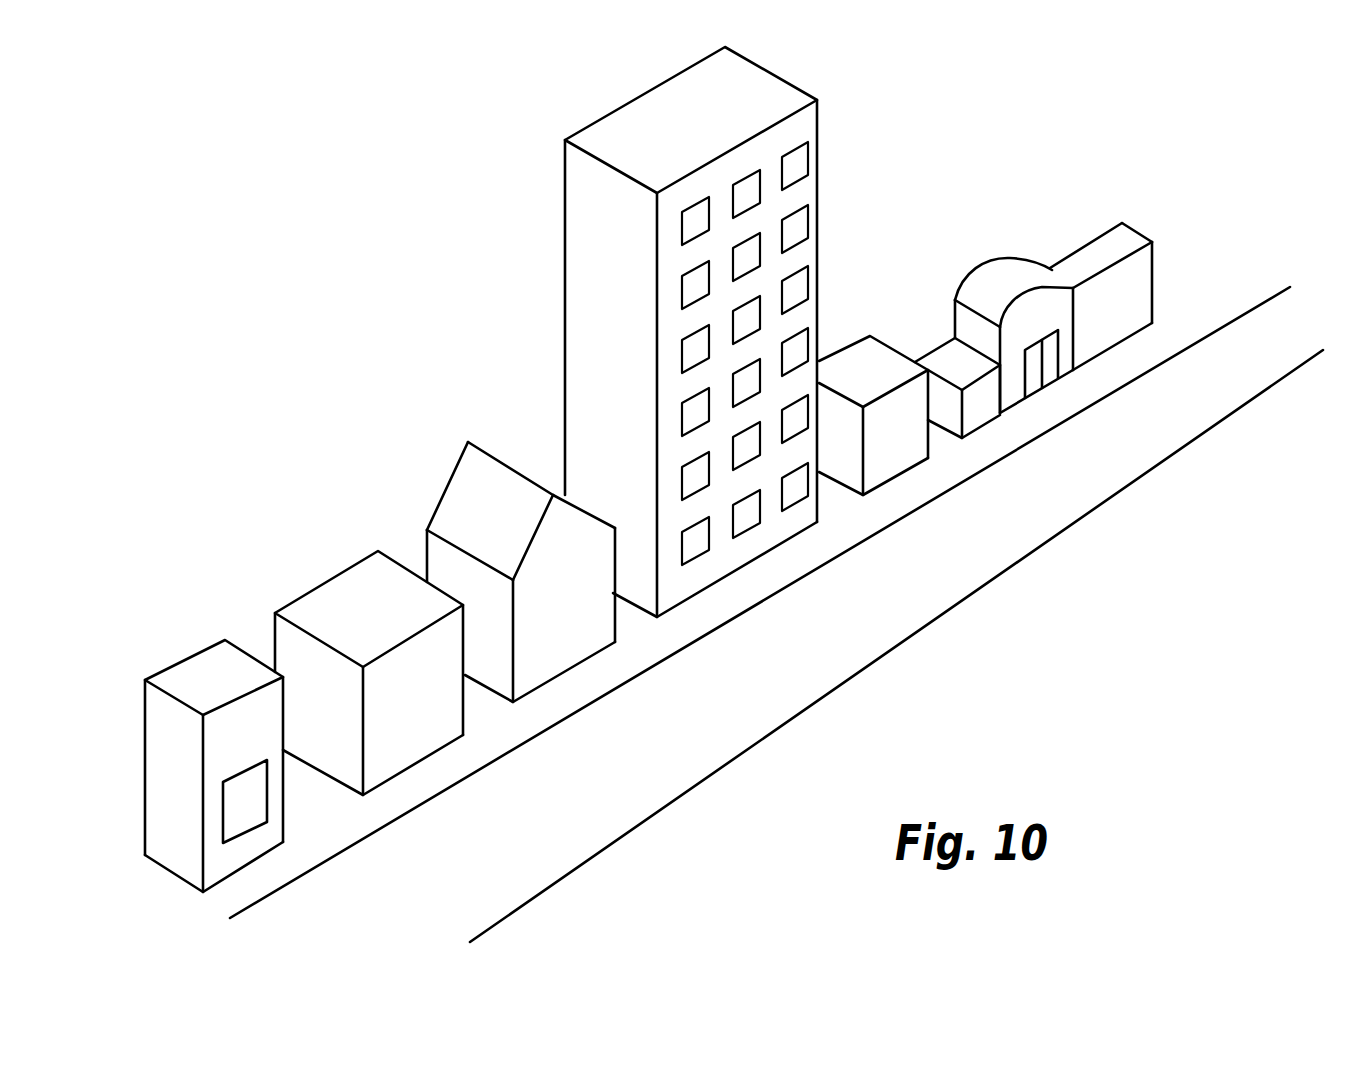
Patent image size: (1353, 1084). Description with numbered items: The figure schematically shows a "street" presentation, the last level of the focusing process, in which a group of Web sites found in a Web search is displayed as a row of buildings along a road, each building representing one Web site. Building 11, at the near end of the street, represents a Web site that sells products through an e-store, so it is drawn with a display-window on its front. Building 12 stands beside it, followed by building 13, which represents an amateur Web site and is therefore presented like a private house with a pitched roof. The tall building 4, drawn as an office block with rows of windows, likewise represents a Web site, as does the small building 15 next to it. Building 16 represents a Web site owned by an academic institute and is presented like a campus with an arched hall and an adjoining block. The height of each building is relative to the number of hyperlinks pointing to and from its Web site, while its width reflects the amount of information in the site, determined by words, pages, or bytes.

The tall building 4 is at (630, 117).
The building 11 is at (183, 658).
The building 12 is at (323, 575).
The building 13 is at (443, 480).
The building 15 is at (862, 337).
The building 16 is at (1002, 258).